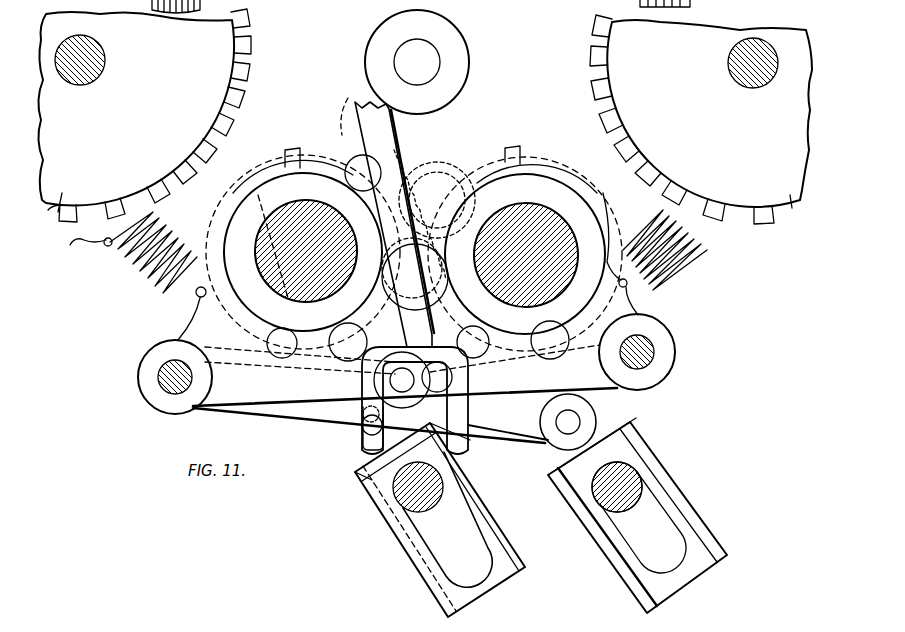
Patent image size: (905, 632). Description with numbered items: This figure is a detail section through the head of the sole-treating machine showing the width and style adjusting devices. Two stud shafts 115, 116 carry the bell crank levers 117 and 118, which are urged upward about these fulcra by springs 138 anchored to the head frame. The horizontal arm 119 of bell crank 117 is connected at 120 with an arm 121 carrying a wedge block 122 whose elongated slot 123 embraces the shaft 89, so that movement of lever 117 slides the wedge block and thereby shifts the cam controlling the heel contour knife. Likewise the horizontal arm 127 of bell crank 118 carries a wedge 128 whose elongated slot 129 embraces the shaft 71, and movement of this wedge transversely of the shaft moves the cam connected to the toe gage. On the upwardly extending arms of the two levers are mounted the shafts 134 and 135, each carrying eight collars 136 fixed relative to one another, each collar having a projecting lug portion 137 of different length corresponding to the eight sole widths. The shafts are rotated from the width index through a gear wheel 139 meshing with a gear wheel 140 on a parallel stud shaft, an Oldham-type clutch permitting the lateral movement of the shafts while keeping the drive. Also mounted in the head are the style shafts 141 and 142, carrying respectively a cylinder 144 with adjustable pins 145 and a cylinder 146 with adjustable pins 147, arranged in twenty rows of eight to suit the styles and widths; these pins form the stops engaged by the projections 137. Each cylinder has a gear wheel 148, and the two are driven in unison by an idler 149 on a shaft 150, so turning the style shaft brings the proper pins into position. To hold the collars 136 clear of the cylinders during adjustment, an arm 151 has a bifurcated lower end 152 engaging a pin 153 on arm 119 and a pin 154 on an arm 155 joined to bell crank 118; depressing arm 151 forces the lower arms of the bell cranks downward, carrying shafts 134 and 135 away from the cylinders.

The shaft 71 is at (635, 483).
The shaft 89 is at (403, 500).
The stud shaft 115 is at (655, 352).
The stud shaft 116 is at (160, 377).
The bell crank lever 117 is at (640, 300).
The bell crank lever 118 is at (186, 326).
The horizontal arm 119 is at (600, 392).
The connection 120 is at (362, 430).
The arm 121 is at (362, 456).
The wedge block 122 is at (360, 482).
The elongated slot 123 is at (460, 528).
The horizontal arm 127 is at (483, 440).
The wedge 128 is at (620, 442).
The elongated slot 129 is at (632, 540).
The shaft 134 is at (525, 254).
The shaft 135 is at (303, 252).
The collars 136 is at (535, 152).
The projecting lug portion 137 is at (568, 192).
The springs 138 is at (706, 251).
The gear wheel 139 is at (437, 165).
The gear wheel 140 is at (348, 98).
The shaft 141 is at (752, 86).
The shaft 142 is at (82, 78).
The cylinder 144 is at (786, 208).
The pins 145 is at (608, 118).
The cylinder 146 is at (56, 208).
The pins 147 is at (70, 245).
The pinion or gear wheel 148 is at (235, 18).
The idler 149 is at (618, 3).
The shaft 150 is at (412, 50).
The arm 151 is at (388, 152).
The bifurcation 152 is at (470, 430).
The pin 153 is at (470, 405).
The pin 154 is at (392, 378).
The arm 155 is at (280, 400).